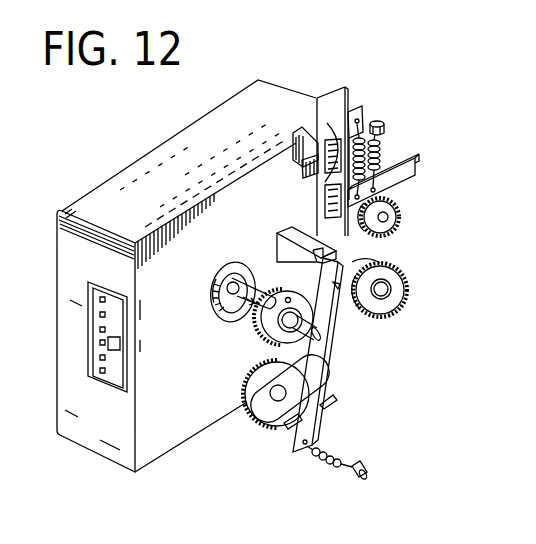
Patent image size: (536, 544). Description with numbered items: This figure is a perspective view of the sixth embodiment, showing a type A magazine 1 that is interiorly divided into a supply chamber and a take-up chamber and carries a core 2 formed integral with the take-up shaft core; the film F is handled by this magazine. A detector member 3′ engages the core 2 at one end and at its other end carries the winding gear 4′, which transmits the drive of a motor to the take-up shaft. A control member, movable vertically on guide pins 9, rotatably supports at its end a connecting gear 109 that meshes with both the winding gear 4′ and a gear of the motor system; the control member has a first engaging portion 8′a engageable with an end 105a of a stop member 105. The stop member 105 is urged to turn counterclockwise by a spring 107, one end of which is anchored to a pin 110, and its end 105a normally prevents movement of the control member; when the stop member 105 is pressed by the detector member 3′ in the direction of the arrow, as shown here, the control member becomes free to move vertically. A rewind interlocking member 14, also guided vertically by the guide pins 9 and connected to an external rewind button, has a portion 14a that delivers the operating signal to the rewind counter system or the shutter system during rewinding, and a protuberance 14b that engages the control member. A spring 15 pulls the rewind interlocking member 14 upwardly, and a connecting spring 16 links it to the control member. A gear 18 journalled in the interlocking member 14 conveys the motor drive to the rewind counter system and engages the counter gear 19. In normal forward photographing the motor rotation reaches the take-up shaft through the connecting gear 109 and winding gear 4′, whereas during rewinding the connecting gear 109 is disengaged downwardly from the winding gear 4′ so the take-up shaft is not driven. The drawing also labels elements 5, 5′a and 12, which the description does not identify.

The type A magazine 1 is at (93, 190).
The film F is at (94, 347).
The core 2 is at (216, 306).
The detector member 3′ is at (253, 309).
The winding gear 4′ is at (308, 340).
The knob rim 5 is at (240, 268).
The gear 5′a is at (347, 264).
The first engaging portion 8′a is at (318, 255).
The guide pins 9 is at (333, 140).
The nut 12 is at (385, 129).
The rewind interlocking member 14 is at (342, 84).
The portion 14a is at (398, 203).
The protuberance 14b is at (303, 172).
The spring 15 is at (381, 158).
The connecting spring 16 is at (359, 137).
The gear 18 is at (388, 212).
The counter gear 19 is at (395, 278).
The stop member 105 is at (318, 368).
The end of stop member 105a is at (338, 286).
The spring 107 is at (330, 464).
The connecting gear 109 is at (246, 391).
The pin 110 is at (366, 469).